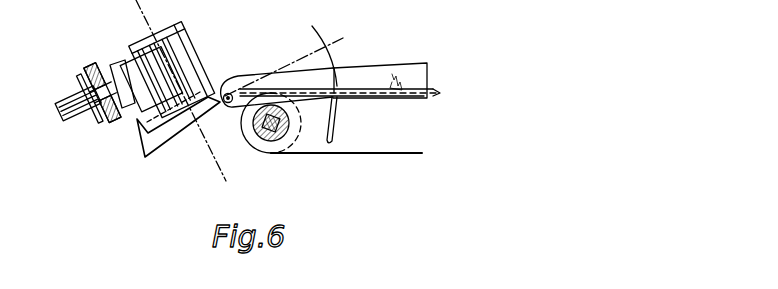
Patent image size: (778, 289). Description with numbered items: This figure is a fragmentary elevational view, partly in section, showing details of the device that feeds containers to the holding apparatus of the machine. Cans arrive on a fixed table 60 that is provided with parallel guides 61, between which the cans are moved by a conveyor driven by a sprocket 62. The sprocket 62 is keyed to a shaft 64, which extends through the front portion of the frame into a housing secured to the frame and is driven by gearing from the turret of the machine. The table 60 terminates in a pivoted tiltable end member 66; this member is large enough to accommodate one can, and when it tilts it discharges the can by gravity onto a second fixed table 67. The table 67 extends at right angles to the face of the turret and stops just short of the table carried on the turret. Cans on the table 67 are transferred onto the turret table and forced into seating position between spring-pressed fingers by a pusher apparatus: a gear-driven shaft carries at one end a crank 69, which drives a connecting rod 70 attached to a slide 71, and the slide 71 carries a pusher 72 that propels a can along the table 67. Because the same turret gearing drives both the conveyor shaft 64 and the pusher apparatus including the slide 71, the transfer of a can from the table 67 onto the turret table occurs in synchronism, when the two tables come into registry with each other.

The fixed table 60 is at (388, 100).
The parallel guides 61 is at (388, 72).
The sprocket 62 is at (278, 141).
The shaft 64 is at (258, 130).
The pivoted tiltable end member 66 is at (307, 93).
The fixed table 67 is at (148, 157).
The crank 69 is at (84, 71).
The connecting rod 70 is at (80, 125).
The slide 71 is at (127, 66).
The pusher 72 is at (168, 53).